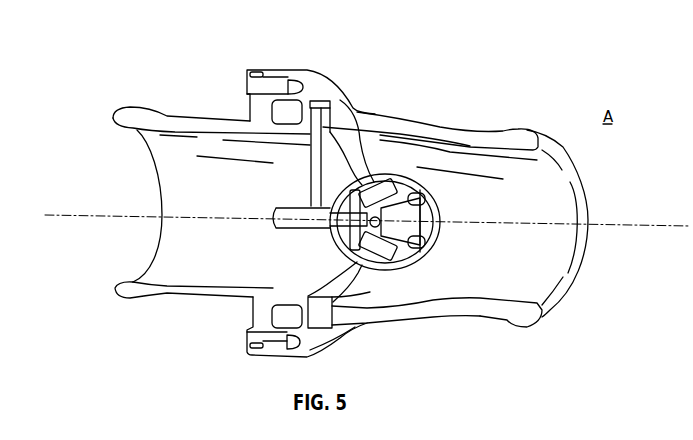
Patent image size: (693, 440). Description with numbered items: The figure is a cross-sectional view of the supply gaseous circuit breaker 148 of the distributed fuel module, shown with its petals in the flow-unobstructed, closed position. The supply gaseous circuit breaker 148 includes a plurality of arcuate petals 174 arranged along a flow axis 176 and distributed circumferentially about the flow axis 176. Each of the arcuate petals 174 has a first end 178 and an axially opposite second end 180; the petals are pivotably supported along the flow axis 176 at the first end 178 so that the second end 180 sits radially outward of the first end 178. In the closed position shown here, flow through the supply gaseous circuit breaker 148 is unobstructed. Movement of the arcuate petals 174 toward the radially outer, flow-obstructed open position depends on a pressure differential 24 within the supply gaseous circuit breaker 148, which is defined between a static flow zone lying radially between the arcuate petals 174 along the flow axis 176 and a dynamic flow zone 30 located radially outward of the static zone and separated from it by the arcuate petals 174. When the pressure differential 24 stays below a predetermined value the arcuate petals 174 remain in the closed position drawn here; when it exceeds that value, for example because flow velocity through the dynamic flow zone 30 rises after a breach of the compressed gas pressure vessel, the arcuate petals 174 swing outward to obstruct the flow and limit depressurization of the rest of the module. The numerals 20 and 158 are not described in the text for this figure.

The hub connector 20 is at (391, 219).
The pressure differential 24 is at (425, 262).
The dynamic flow zone 30 is at (352, 296).
The supply gaseous circuit breaker 148 is at (110, 322).
The tubular body 158 is at (455, 219).
The arcuate petals 174 is at (373, 187).
The flow axis 176 is at (107, 216).
The first end 178 is at (313, 182).
The second end 180 is at (410, 185).